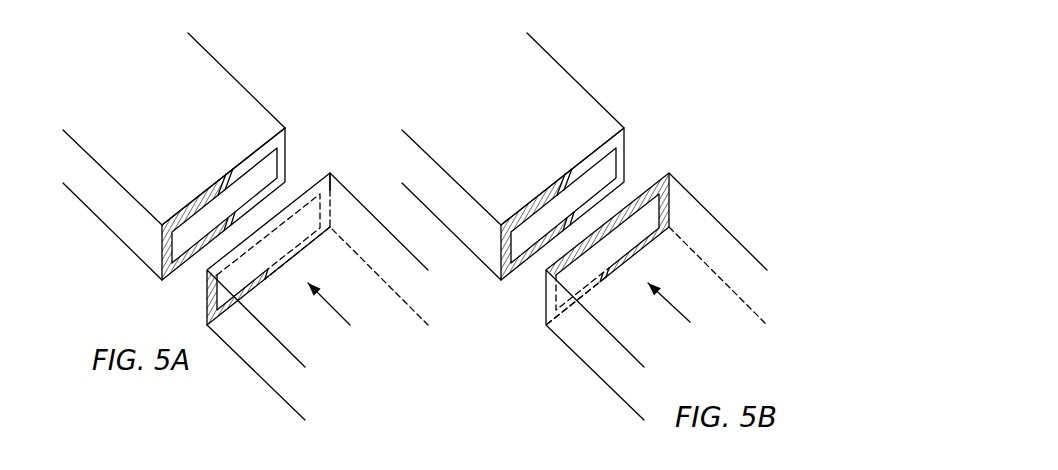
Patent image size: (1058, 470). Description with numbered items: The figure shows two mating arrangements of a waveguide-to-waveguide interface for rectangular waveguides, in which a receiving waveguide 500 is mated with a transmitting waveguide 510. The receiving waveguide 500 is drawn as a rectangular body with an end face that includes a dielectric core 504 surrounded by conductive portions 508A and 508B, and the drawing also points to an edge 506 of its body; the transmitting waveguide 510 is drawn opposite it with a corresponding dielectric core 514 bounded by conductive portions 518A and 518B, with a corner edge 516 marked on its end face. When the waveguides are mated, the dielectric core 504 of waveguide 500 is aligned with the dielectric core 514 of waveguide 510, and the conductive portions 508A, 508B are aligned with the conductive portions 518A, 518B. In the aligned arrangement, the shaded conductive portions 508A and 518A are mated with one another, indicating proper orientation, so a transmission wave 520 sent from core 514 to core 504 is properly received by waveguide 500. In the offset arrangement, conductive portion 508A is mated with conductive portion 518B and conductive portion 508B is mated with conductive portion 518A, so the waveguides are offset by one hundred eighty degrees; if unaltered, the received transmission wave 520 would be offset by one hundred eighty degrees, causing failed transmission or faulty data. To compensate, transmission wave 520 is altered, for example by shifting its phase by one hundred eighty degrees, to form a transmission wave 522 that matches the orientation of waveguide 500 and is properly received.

In FIG. 5A, the receiving waveguide 500 is at (233, 50).
In FIG. 5B, the receiving waveguide 500 is at (599, 68).
In FIG. 5A, the dielectric core 504 is at (283, 163).
In FIG. 5B, the dielectric core 504 is at (622, 163).
In FIG. 5A, the top surface 506 is at (269, 138).
In FIG. 5A, the conductive portion 508A is at (190, 202).
In FIG. 5B, the conductive portion 508A is at (533, 200).
In FIG. 5A, the conductive portion 508B is at (257, 157).
In FIG. 5B, the conductive portion 508B is at (597, 160).
In FIG. 5A, the transmitting waveguide 510 is at (258, 390).
In FIG. 5B, the transmitting waveguide 510 is at (709, 191).
In FIG. 5A, the dielectric core 514 is at (328, 209).
In FIG. 5B, the dielectric core 514 is at (557, 298).
In FIG. 5A, the corner edge 516 is at (318, 184).
In FIG. 5A, the conductive portion 518A is at (248, 288).
In FIG. 5B, the conductive portion 518A is at (647, 246).
In FIG. 5A, the conductive portion 518B is at (297, 251).
In FIG. 5B, the conductive portion 518B is at (590, 283).
In FIG. 5A, the transmission wave 520 is at (340, 320).
In FIG. 5B, the transmission wave 522 is at (686, 318).